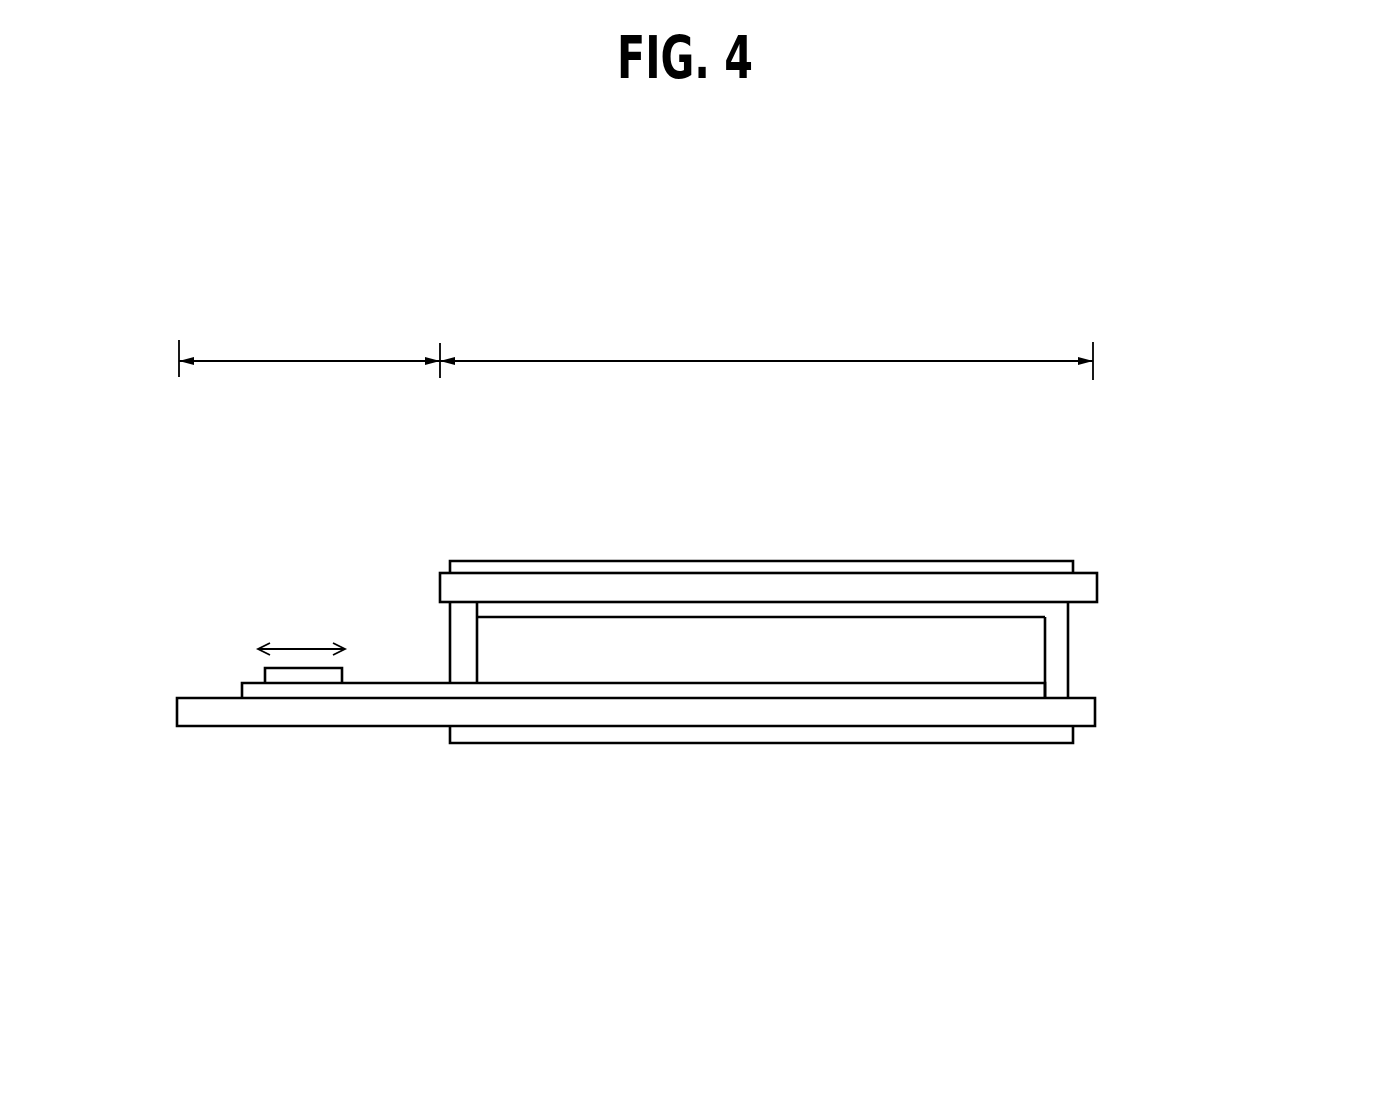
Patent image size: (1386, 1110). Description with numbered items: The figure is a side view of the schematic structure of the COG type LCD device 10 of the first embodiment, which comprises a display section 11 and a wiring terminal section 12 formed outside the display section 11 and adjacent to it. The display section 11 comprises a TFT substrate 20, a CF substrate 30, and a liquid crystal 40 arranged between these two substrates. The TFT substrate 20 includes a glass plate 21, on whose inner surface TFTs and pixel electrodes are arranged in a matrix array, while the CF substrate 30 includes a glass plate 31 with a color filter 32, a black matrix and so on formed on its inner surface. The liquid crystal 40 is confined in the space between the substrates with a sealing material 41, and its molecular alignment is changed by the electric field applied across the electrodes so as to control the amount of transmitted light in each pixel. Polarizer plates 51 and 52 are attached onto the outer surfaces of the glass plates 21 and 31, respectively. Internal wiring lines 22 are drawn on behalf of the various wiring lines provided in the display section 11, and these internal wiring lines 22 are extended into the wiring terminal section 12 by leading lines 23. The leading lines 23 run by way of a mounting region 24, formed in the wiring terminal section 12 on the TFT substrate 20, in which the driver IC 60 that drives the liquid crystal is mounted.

The LCD device 10 is at (602, 280).
The display section 11 is at (766, 328).
The wiring terminal section 12 is at (322, 325).
The TFT substrate 20 is at (1113, 687).
The glass plate 21 is at (428, 713).
The internal wiring lines 22 is at (800, 692).
The leading lines 23 is at (410, 693).
The mounting region 24 is at (290, 598).
The CF substrate 30 is at (1113, 572).
The glass plate 31 is at (848, 592).
The color filter 32 is at (949, 609).
The liquid crystal 40 is at (972, 670).
The sealing material 41 is at (1123, 643).
The polarizer plate 51 is at (630, 735).
The polarizer plate 52 is at (703, 566).
The driver IC 60 is at (302, 677).